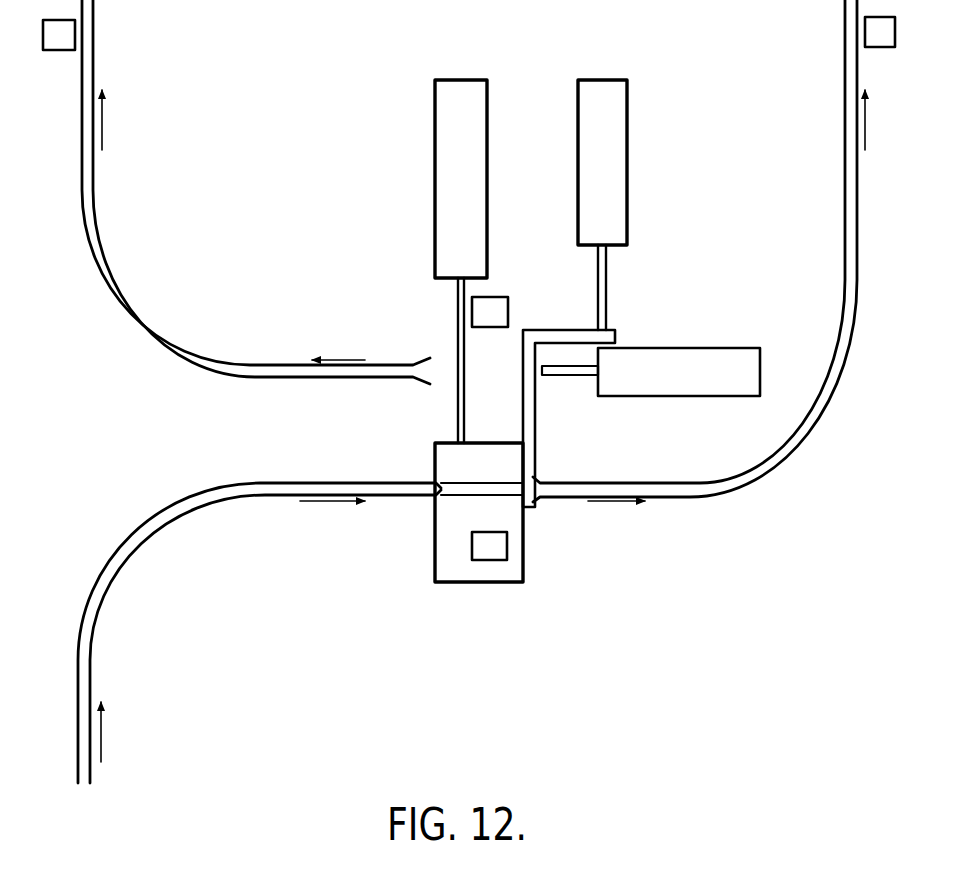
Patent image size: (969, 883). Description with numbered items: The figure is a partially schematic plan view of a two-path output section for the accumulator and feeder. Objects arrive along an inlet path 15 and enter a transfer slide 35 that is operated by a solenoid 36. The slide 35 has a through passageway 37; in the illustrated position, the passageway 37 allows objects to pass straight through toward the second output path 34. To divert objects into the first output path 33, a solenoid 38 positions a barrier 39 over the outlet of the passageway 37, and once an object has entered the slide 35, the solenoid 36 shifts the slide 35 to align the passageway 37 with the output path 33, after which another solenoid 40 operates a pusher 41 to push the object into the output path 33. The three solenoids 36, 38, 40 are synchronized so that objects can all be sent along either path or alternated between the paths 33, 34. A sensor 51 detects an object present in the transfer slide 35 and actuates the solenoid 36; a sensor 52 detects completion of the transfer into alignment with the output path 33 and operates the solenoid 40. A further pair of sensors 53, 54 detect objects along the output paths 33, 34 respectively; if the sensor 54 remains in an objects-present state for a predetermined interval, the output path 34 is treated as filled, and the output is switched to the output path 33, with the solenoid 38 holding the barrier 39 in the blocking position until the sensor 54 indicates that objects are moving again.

The inlet conduit 15 is at (95, 635).
The output path 33 is at (94, 190).
The output path 34 is at (845, 257).
The transfer slide 35 is at (435, 534).
The solenoid 36 is at (488, 140).
The through passageway 37 is at (464, 484).
The solenoid 38 is at (628, 138).
The barrier 39 is at (537, 423).
The solenoid 40 is at (692, 347).
The pusher 41 is at (578, 376).
The sensor 51 is at (508, 545).
The sensor 52 is at (509, 310).
The sensor 53 is at (60, 50).
The sensor 54 is at (880, 47).